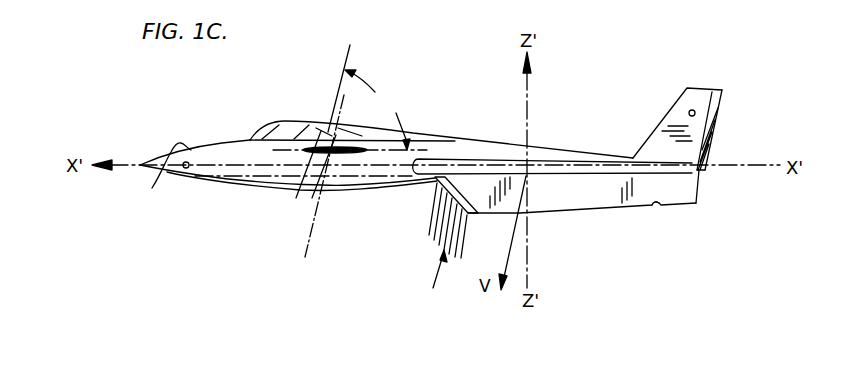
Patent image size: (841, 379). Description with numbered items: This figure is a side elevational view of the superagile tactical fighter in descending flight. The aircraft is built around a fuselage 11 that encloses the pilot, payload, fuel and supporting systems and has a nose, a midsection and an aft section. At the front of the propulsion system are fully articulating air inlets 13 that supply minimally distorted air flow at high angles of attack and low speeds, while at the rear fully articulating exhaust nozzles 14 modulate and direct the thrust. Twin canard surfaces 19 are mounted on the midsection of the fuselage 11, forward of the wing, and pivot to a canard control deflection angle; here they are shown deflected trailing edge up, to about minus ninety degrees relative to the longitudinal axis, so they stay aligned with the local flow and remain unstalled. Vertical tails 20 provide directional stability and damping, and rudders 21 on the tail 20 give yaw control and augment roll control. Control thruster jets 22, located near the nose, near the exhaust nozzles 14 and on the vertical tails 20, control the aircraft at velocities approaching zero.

The fuselage 11 is at (224, 143).
The fully articulating air inlets 13 is at (430, 215).
The fully articulating exhaust nozzles 14 is at (698, 190).
The canard surfaces 19 is at (303, 185).
The vertical tails 20 is at (663, 137).
The rudders 21 is at (711, 128).
The control thruster jets 22 is at (186, 169).